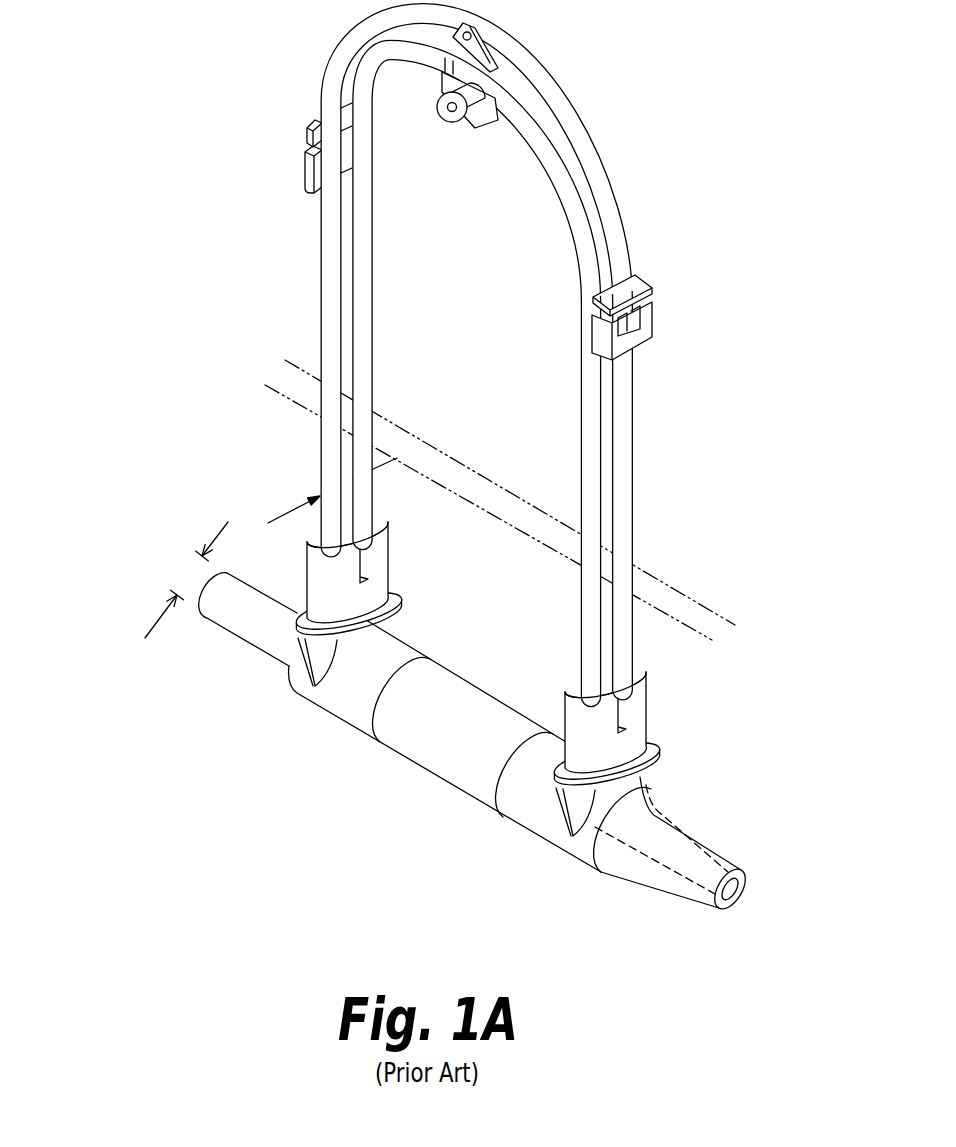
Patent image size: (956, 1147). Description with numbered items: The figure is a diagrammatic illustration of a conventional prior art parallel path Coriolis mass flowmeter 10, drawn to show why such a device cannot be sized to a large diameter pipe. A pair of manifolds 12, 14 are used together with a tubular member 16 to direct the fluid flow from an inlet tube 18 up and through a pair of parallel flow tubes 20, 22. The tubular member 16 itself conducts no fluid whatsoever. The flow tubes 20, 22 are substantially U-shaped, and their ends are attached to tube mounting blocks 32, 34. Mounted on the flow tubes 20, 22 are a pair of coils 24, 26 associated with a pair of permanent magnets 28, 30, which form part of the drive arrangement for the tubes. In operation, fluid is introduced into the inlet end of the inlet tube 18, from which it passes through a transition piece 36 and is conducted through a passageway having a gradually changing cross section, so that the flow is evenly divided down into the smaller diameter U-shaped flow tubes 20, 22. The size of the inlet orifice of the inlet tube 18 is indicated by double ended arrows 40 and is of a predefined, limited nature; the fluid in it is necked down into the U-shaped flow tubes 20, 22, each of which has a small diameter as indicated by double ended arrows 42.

The parallel path Coriolis mass flowmeter 10 is at (426, 465).
The manifold 12 is at (292, 694).
The manifold 14 is at (600, 873).
The tubular member 16 is at (438, 753).
The inlet tube 18 is at (243, 630).
The flow tube 20 is at (580, 108).
The flow tube 22 is at (552, 160).
The coil 24 is at (308, 126).
The coil 26 is at (648, 284).
The permanent magnet 28 is at (306, 172).
The permanent magnet 30 is at (650, 322).
The tube mounting block 32 is at (385, 552).
The tube mounting block 34 is at (640, 705).
The transition piece 36 is at (388, 623).
The double ended arrows 40 is at (228, 522).
The double ended arrows 42 is at (292, 512).